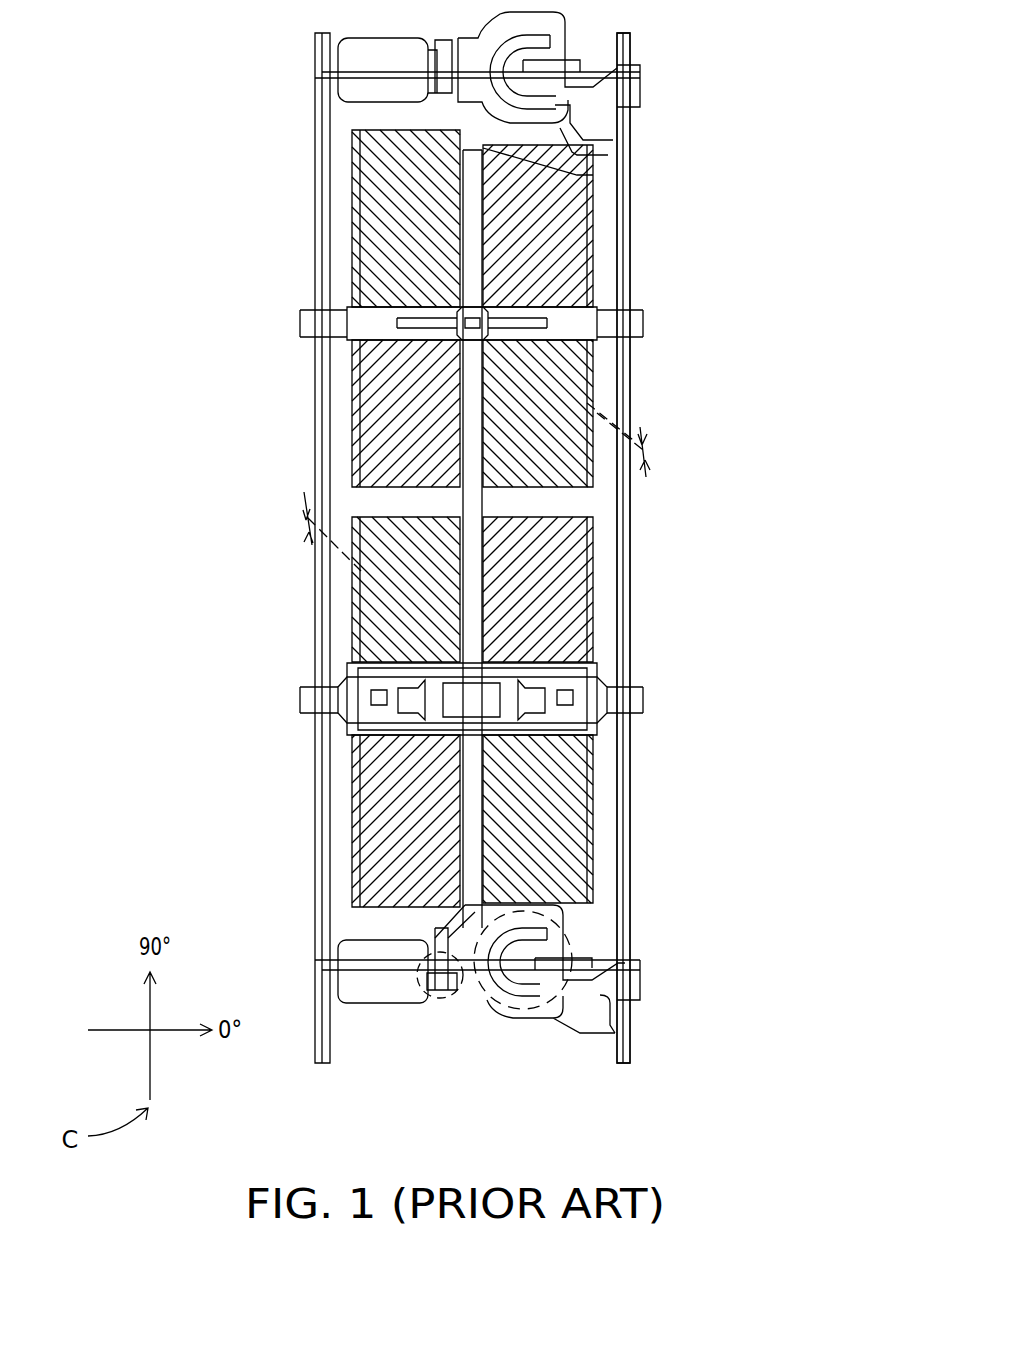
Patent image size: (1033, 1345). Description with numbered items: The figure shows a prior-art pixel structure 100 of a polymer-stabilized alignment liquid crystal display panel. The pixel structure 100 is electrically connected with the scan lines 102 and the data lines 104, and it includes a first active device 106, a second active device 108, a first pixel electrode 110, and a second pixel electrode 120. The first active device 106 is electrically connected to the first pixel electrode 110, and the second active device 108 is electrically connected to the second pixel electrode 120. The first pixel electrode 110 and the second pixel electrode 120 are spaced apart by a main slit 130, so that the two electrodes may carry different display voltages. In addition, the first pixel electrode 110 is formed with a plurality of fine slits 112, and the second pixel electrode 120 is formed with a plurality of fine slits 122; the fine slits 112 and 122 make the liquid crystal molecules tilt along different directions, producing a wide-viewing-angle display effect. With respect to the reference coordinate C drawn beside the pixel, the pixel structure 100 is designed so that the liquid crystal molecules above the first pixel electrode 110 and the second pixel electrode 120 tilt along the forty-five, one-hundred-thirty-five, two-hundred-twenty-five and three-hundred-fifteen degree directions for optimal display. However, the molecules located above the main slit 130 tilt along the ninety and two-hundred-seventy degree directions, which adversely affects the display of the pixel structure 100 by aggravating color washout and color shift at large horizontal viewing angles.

The pixel structure 100 is at (714, 1122).
The scan line 102 is at (468, 1003).
The data line 104 is at (625, 913).
The first active device 106 is at (520, 1012).
The second active device 108 is at (436, 1003).
The first pixel electrode 110 is at (372, 842).
The fine slits 112 is at (300, 511).
The second pixel electrode 120 is at (365, 372).
The fine slits 122 is at (650, 455).
The main slit 130 is at (540, 503).